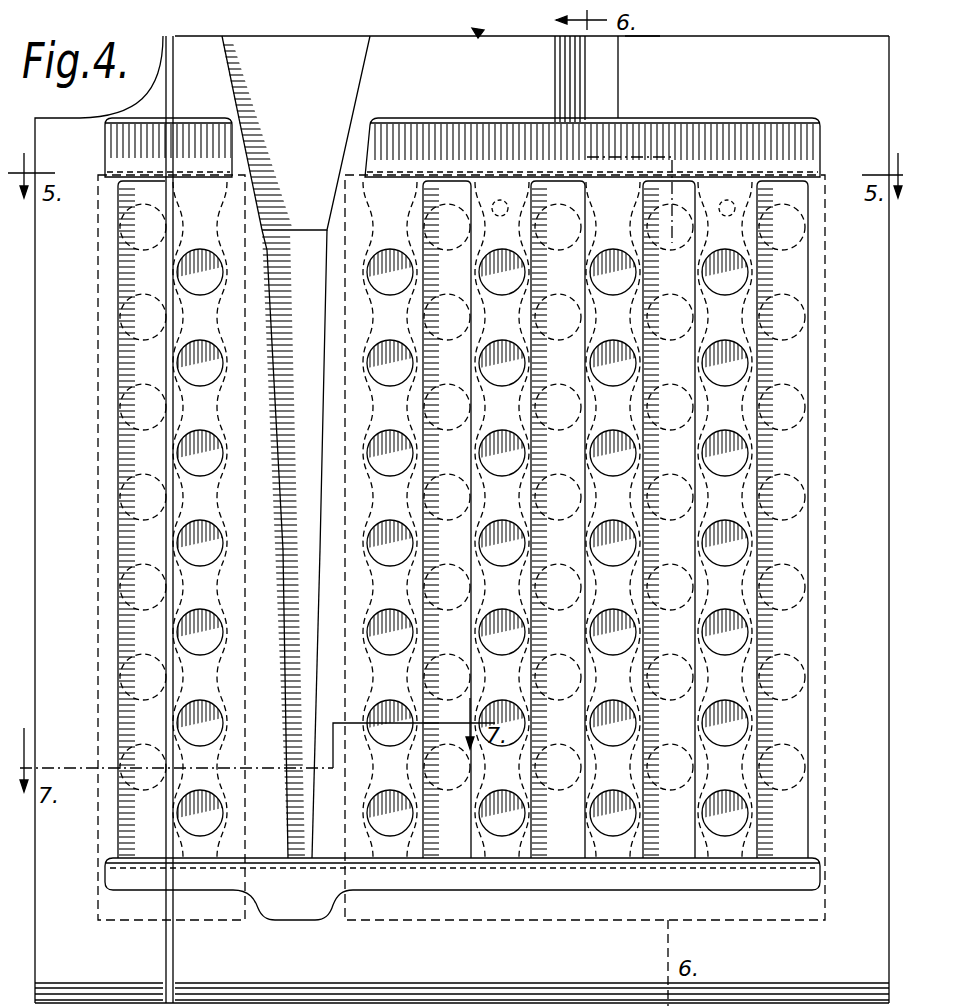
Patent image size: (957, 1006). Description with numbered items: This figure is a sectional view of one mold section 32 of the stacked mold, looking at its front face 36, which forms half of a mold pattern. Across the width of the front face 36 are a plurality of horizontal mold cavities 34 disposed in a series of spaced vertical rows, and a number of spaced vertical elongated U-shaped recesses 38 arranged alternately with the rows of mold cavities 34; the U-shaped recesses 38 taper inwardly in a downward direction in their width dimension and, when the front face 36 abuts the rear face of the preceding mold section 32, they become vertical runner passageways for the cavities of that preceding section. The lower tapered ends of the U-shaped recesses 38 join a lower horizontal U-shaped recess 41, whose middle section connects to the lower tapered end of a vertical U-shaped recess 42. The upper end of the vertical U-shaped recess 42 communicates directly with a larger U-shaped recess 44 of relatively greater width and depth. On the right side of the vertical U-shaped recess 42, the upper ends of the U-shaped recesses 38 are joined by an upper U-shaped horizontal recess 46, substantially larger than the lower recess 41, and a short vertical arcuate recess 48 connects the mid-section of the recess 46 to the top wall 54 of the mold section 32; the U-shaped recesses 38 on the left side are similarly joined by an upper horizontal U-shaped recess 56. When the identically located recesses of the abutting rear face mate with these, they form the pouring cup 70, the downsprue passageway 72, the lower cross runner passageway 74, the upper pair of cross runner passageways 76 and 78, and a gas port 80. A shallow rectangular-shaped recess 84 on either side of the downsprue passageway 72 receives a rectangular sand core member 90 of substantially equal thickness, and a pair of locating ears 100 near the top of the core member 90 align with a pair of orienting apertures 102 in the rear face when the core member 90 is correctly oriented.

The mold section 32 is at (478, 34).
The mold cavities 34 is at (748, 272).
The front face 36 is at (793, 53).
The U-shaped recesses 38 is at (132, 843).
The lower horizontal U-shaped recess 41 is at (810, 878).
The vertical U-shaped recess 42 is at (320, 517).
The U-shaped recess 44 is at (348, 78).
The upper U-shaped horizontal recess 46 is at (673, 147).
The short vertical arcuate recess 48 is at (641, 36).
The top wall 54 is at (851, 42).
The upper horizontal U-shaped recess 56 is at (126, 140).
The pouring cup 70 is at (335, 56).
The downsprue passageway 72 is at (313, 660).
The lower cross runner passageway 74 is at (802, 897).
The upper cross runner passageway 76 is at (415, 118).
The upper cross runner passageway 78 is at (183, 118).
The gas port 80 is at (603, 60).
The shallow rectangular-shaped recess 84 is at (245, 720).
The core member 90 is at (251, 663).
The locating ears 100 is at (478, 192).
The orienting apertures 102 is at (540, 192).